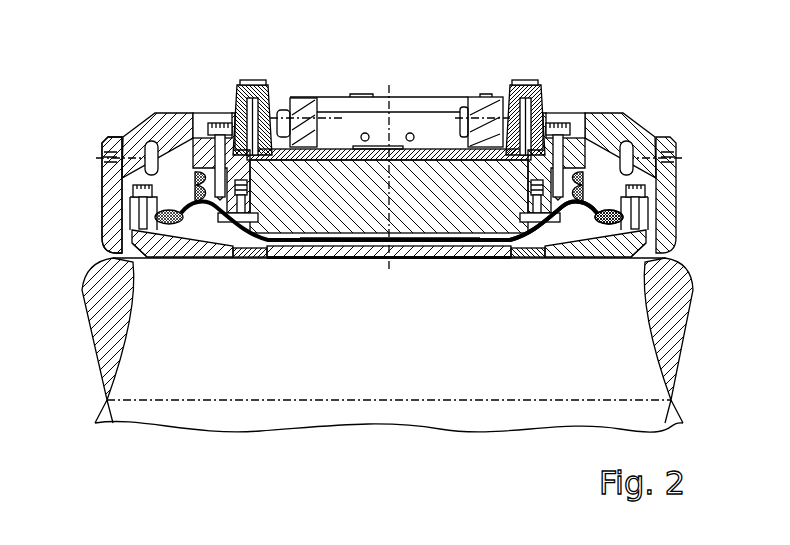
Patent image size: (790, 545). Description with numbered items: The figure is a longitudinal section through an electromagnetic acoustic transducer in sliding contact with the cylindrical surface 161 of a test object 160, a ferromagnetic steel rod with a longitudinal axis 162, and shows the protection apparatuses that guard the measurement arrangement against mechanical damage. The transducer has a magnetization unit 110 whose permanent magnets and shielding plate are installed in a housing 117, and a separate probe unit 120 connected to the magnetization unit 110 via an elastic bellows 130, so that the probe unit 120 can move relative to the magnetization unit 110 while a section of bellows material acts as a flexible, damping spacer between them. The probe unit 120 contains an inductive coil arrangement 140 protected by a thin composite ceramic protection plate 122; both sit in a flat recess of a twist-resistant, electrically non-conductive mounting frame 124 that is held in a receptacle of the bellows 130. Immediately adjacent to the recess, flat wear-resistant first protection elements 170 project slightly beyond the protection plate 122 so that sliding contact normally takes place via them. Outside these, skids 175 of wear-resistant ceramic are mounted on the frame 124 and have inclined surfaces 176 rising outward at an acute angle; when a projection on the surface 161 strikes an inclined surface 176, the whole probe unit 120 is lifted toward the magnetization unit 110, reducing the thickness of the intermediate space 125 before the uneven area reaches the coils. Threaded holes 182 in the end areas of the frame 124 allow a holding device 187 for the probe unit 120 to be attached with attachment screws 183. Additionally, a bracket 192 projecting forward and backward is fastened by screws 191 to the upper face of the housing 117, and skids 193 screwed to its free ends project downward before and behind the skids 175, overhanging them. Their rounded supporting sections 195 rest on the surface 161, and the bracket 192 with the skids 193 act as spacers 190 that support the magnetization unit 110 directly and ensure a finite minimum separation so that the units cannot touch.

The magnetization unit 110 is at (436, 128).
The housing 117 is at (190, 167).
The probe unit 120 is at (397, 269).
The protection plate 122 is at (320, 258).
The mounting frame 124 is at (565, 232).
The intermediate space 125 is at (480, 258).
The bellows 130 is at (590, 203).
The inductive coil arrangement 140 is at (437, 258).
The test object 160 is at (597, 374).
The cylindrical surface 161 is at (360, 258).
The longitudinal axis 162 is at (510, 400).
The first protection elements 170 is at (247, 258).
The skids 175 is at (198, 258).
The inclined surfaces 176 is at (157, 262).
The threaded holes 182 is at (645, 212).
The attachment screws 183 is at (653, 184).
The holding device 187 is at (645, 200).
The spacers 190 is at (84, 130).
The screws 191 is at (227, 117).
The bracket 192 is at (135, 140).
The skids 193 is at (107, 192).
The supporting sections 195 is at (108, 243).